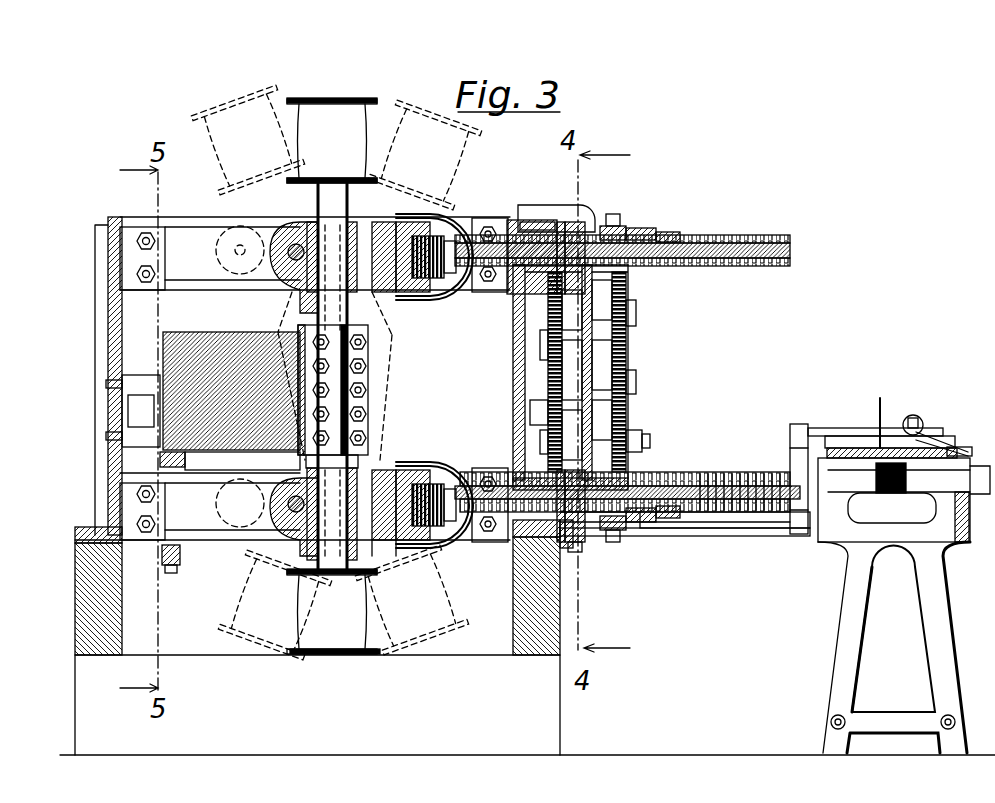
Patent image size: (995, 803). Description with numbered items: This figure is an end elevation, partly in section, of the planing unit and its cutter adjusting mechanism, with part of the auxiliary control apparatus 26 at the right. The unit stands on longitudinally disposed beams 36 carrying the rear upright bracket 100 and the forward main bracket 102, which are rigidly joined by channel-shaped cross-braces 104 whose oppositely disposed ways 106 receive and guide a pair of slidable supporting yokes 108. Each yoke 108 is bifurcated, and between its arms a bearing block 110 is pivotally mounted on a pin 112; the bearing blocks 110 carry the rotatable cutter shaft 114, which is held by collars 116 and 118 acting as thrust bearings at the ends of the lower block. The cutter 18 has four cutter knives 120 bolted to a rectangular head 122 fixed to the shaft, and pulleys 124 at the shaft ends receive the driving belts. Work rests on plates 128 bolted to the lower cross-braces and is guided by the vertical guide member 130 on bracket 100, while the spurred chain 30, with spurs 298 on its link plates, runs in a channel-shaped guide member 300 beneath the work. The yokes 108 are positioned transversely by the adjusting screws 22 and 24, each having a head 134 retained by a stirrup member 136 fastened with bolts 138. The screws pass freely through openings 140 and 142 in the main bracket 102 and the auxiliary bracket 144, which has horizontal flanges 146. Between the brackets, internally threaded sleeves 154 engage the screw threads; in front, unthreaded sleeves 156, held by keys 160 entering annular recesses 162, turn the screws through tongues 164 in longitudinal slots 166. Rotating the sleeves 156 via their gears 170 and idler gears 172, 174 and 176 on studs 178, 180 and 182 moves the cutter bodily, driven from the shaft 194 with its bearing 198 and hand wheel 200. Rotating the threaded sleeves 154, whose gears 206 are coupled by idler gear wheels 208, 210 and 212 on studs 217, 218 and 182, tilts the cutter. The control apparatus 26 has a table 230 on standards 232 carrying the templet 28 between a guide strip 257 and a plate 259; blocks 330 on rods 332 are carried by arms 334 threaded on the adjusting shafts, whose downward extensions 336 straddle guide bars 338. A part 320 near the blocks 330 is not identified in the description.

The cutter 18 is at (368, 398).
The adjusting screw 22 is at (782, 243).
The adjusting screw 24 is at (762, 514).
The auxiliary control apparatus 26 is at (898, 436).
The templet 28 is at (881, 415).
The spurred chain 30 is at (162, 560).
The longitudinally disposed beams 36 is at (76, 572).
The upright side bracket 100 is at (108, 220).
The upright side bracket 102 is at (520, 538).
The cross-braces 104 is at (212, 222).
The ways 106 is at (92, 503).
The supporting yokes 108 is at (412, 226).
The bearing block 110 is at (292, 262).
The pin 112 is at (285, 268).
The cutter shaft 114 is at (372, 300).
The collar 116 is at (345, 472).
The collar 118 is at (452, 556).
The cutter knives 120 is at (366, 346).
The rectangular head 122 is at (366, 368).
The pulleys 124 is at (334, 100).
The plates 128 is at (252, 466).
The guide member 130 is at (122, 380).
The head 134 is at (430, 238).
The stirrup member 136 is at (440, 222).
The bolts 138 is at (392, 224).
The opening 140 is at (500, 218).
The opening 142 is at (592, 230).
The auxiliary bracket 144 is at (588, 222).
The horizontal flanges 146 is at (530, 206).
The internally threaded rotatable sleeves 154 is at (584, 225).
The unthreaded sleeves 156 is at (642, 230).
The fingers or keys 160 is at (622, 222).
The annular recesses 162 is at (628, 232).
The keys or tongues 164 is at (652, 236).
The slots 166 is at (730, 236).
The gears 170 is at (628, 284).
The idler gear 172 is at (628, 296).
The idler gear 174 is at (628, 364).
The idler gear 176 is at (628, 420).
The stud 178 is at (638, 313).
The stud 180 is at (638, 382).
The stud 182 is at (652, 440).
The shaft 194 is at (748, 484).
The bearing 198 is at (892, 493).
The hand wheel 200 is at (540, 274).
The gears 206 is at (580, 552).
The idler gear wheel 208 is at (548, 300).
The idler gear wheel 210 is at (552, 352).
The idler gear wheel 212 is at (548, 410).
The stud 217 is at (562, 318).
The stud 218 is at (535, 400).
The horizontal table 230 is at (878, 494).
The frames or standards 232 is at (860, 604).
The guide strip 257 is at (840, 448).
The plate 259 is at (968, 444).
The spurs 298 is at (176, 572).
The channel-shaped guide member 300 is at (160, 460).
The lever 320 is at (940, 440).
The blocks 330 is at (915, 416).
The rods 332 is at (822, 428).
The arms 334 is at (796, 424).
The downward extensions 336 is at (795, 528).
The guide bars 338 is at (772, 536).